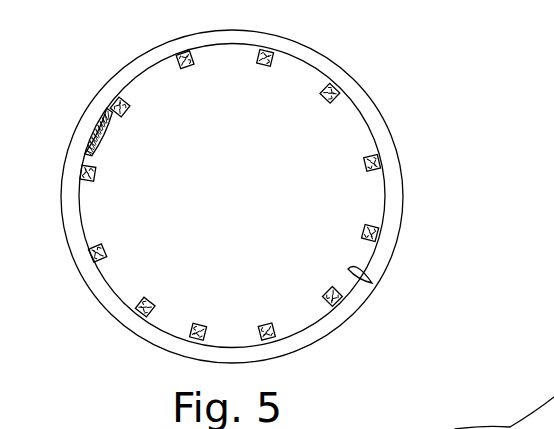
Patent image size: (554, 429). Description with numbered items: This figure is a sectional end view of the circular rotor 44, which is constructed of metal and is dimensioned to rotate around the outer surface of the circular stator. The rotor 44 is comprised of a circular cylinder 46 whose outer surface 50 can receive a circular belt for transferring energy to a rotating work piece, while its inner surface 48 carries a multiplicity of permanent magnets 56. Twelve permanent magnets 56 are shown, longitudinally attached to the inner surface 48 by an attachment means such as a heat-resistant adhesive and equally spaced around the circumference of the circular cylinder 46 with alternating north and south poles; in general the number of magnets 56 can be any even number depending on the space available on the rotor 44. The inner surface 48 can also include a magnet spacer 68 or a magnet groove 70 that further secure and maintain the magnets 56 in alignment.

The circular rotor 44 is at (286, 196).
The circular cylinder 46 is at (393, 178).
The inner surface 48 is at (368, 284).
The outer surface 50 is at (333, 62).
The permanent magnets 56 is at (342, 90).
The magnet spacer 68 is at (100, 123).
The magnet groove 70 is at (188, 55).